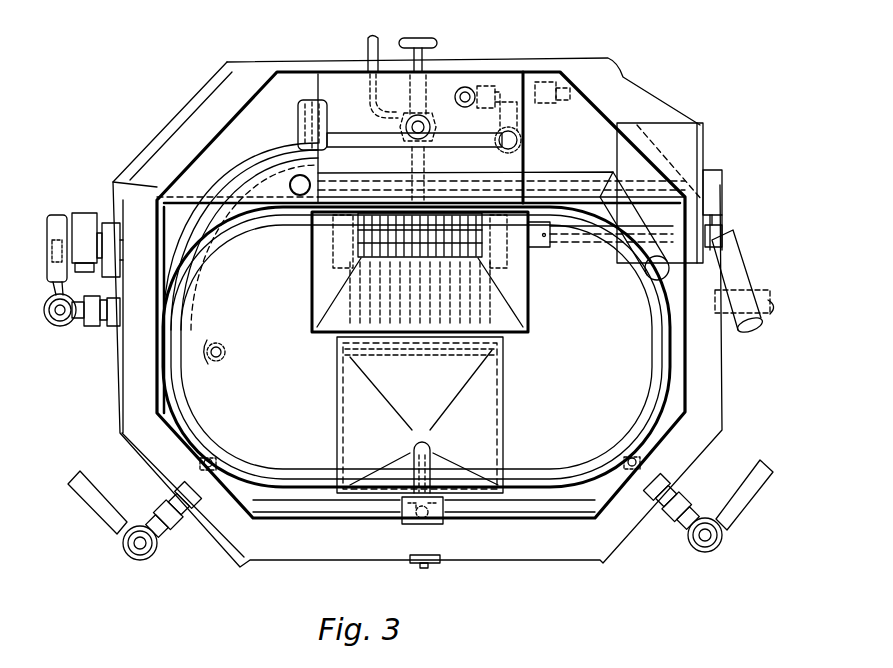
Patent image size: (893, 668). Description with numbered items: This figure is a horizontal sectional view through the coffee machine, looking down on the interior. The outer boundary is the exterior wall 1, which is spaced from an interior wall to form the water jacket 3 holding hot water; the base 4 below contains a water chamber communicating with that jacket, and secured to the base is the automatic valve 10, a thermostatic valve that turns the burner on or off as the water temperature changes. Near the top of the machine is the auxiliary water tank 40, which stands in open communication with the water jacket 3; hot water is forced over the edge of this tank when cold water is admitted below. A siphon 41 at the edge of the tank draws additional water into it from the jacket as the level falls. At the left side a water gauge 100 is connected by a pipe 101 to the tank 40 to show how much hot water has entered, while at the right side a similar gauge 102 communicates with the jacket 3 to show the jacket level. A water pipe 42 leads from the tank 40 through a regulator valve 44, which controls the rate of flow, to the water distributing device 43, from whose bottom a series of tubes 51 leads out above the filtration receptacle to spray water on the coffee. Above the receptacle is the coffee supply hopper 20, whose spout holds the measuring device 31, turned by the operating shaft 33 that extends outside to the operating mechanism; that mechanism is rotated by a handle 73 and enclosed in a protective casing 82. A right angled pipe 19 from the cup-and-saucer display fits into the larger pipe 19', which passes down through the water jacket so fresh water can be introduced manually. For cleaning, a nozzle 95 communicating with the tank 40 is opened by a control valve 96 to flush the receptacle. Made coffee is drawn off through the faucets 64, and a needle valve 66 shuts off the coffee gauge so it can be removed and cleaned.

The exterior wall 1 is at (685, 360).
The water jacket 3 is at (218, 160).
The base 4 is at (764, 398).
The automatic valve 10 is at (86, 213).
The right angled pipe 19 is at (285, 188).
The pipe 19' is at (501, 207).
The coffee supply hopper 20 is at (312, 270).
The measuring device 31 is at (357, 250).
The operating shaft 33 is at (573, 240).
The auxiliary water tank 40 is at (525, 160).
The siphon 41 is at (327, 104).
The water pipe 42 is at (372, 140).
The water distributing device 43 is at (514, 412).
The regulator valve 44 is at (498, 90).
The tubes 51 is at (347, 305).
The faucets 64 is at (410, 530).
The needle valve 66 is at (428, 565).
The handle 73 is at (737, 280).
The casing 82 is at (705, 253).
The nozzle 95 is at (424, 160).
The control valve 96 is at (432, 43).
The water gauge 100 is at (213, 467).
The pipe 101 is at (202, 230).
The gauge 102 is at (631, 468).